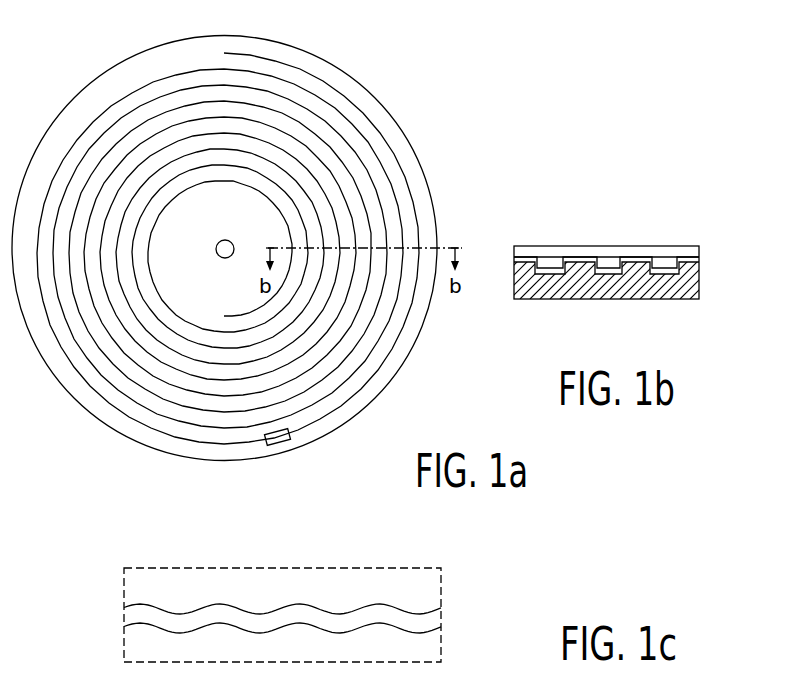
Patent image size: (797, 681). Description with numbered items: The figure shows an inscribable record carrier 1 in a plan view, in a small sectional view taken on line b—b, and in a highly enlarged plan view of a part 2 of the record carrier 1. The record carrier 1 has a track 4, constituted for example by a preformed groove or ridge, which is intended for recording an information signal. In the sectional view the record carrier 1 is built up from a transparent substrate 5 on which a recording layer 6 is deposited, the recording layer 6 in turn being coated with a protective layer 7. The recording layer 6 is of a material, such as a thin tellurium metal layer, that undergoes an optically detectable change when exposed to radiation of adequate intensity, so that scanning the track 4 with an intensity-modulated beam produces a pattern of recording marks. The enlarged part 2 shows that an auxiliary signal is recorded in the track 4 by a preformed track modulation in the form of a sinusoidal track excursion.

In FIG. 1A, the record carrier 1 is at (381, 85).
In FIG. 1B, the record carrier 1 is at (538, 201).
In FIG. 1A, the part 2 is at (283, 447).
In FIG. 1C, the part 2 is at (402, 567).
In FIG. 1A, the track 4 is at (121, 413).
In FIG. 1B, the track 4 is at (655, 277).
In FIG. 1C, the track 4 is at (436, 618).
In FIG. 1B, the transparent substrate 5 is at (527, 288).
In FIG. 1B, the recording layer 6 is at (678, 258).
In FIG. 1B, the protective layer 7 is at (600, 252).